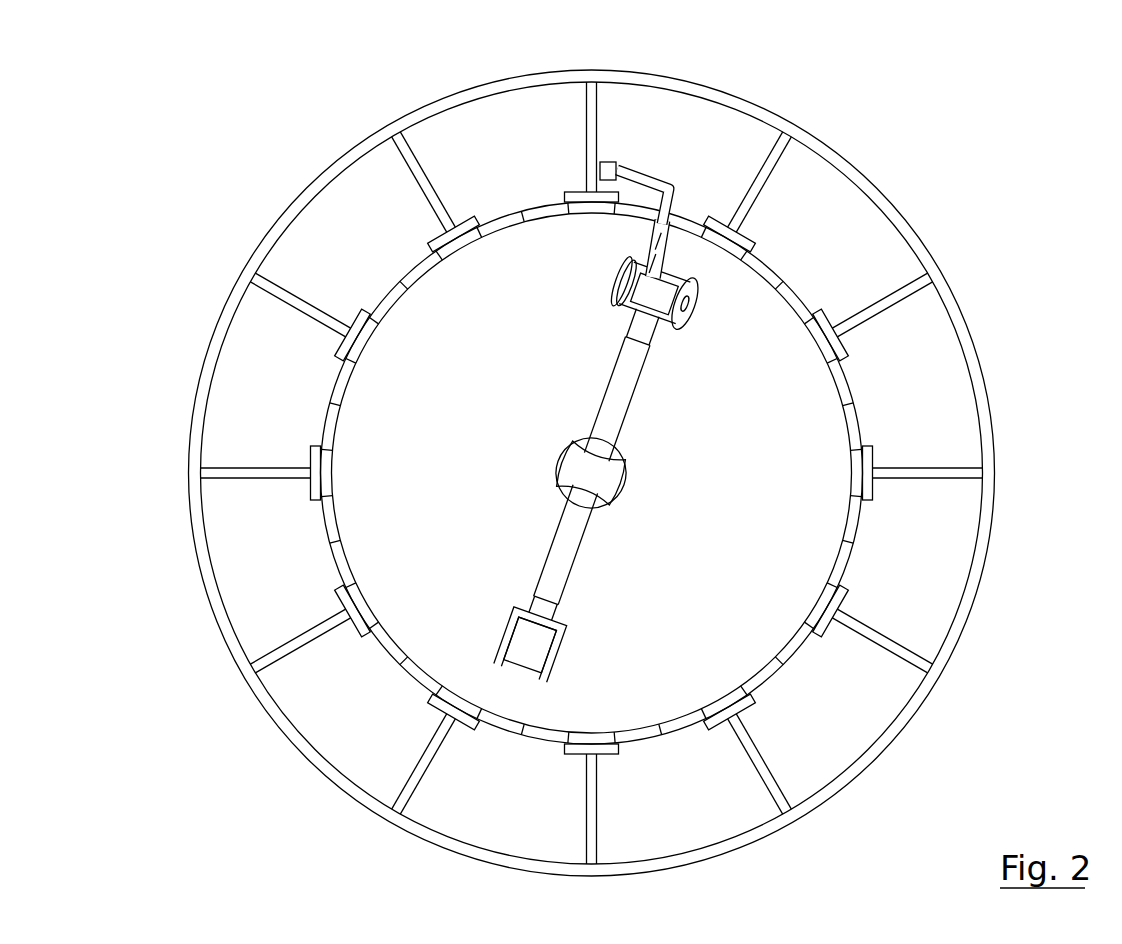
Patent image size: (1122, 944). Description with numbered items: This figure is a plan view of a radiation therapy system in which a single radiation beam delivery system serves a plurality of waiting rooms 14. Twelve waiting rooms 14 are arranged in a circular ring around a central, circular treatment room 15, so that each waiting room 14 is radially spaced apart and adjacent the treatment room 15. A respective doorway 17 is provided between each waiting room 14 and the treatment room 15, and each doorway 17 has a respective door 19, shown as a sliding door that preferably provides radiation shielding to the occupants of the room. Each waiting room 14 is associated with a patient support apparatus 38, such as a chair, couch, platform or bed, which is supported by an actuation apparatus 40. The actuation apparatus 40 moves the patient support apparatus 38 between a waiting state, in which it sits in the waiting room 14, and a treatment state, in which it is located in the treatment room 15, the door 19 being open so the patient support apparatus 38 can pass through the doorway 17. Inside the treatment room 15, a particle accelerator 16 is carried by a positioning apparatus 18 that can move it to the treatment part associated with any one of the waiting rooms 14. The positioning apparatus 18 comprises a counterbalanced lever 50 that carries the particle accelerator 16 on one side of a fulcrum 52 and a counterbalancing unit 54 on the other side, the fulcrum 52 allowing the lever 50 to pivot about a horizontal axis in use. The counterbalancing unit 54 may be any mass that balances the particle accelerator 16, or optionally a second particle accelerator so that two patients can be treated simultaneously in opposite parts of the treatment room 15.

The waiting room 14 is at (720, 144).
The treatment room 15 is at (459, 499).
The particle accelerator 16 is at (655, 293).
The doorway 17 is at (641, 206).
The positioning apparatus 18 is at (619, 358).
The door 19 is at (773, 266).
The patient support apparatus 38 is at (657, 248).
The actuation apparatus 40 is at (656, 158).
The counterbalanced lever 50 is at (594, 464).
The fulcrum 52 is at (590, 472).
The counterbalancing unit 54 is at (530, 644).